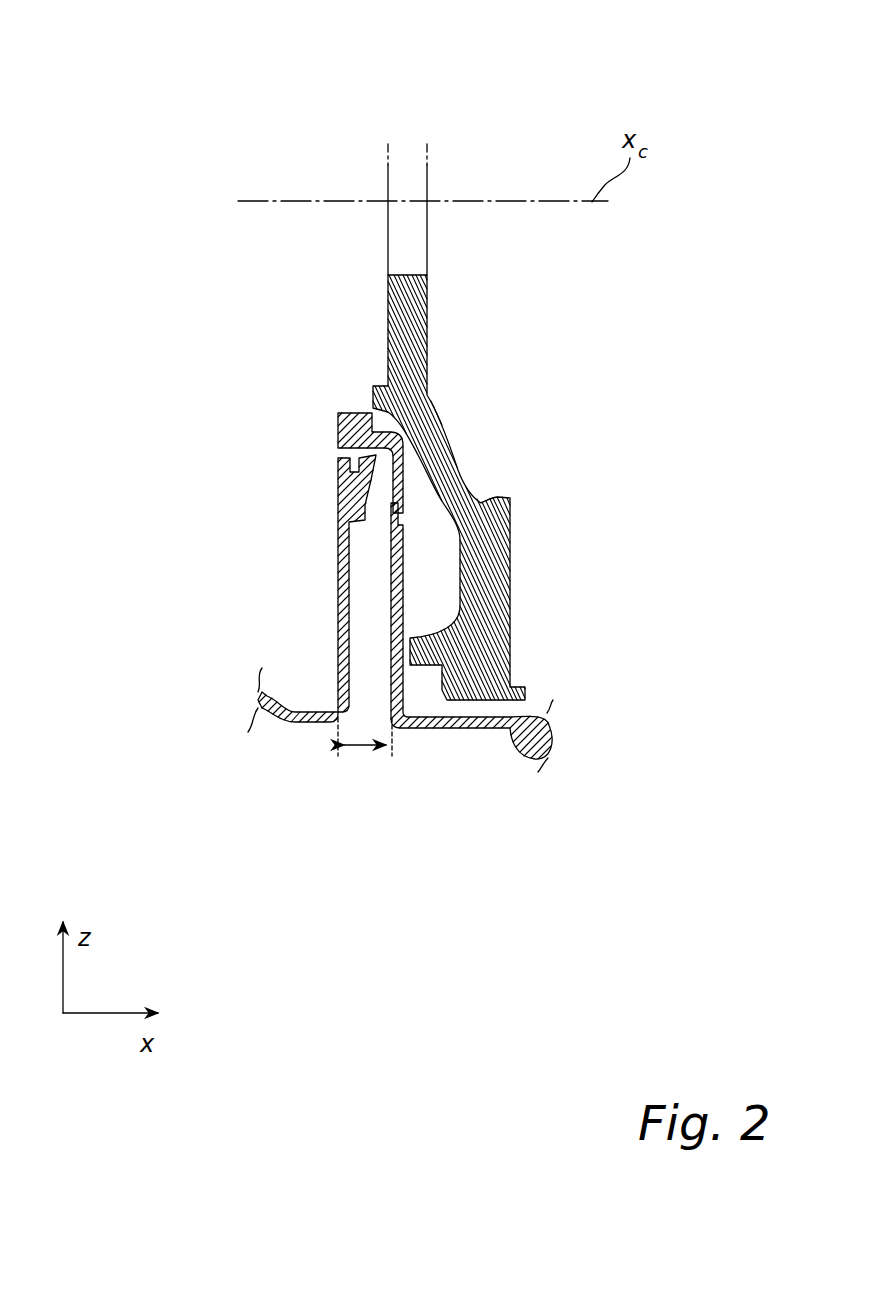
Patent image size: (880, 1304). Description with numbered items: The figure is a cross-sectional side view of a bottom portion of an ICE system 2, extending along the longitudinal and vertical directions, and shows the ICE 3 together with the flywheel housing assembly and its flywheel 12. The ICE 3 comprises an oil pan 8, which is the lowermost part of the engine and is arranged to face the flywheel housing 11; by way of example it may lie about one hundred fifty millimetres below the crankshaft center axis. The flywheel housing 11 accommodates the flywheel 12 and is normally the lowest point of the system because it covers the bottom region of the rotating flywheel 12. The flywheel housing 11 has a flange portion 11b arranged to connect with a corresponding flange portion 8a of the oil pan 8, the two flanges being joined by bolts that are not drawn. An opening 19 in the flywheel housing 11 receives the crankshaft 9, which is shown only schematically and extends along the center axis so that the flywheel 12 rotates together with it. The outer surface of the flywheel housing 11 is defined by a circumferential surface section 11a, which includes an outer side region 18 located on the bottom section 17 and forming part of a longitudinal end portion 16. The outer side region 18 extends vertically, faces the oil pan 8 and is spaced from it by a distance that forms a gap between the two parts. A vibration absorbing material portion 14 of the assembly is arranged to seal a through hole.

The ICE system 2 is at (266, 142).
The ICE 3 is at (206, 160).
The oil pan 8 is at (273, 712).
The flange portion of the oil pan 8a is at (363, 492).
The crankshaft 9 is at (427, 190).
The flywheel housing 11 is at (457, 728).
The circumferential surface section 11a is at (440, 728).
The flange portion of the flywheel housing 11b is at (345, 411).
The flywheel 12 is at (487, 563).
The vibration absorbing material portion 14 is at (390, 596).
The longitudinal end portion 16 is at (370, 551).
The bottom section 17 is at (530, 810).
The outer side region 18 is at (364, 747).
The opening 19 is at (412, 240).